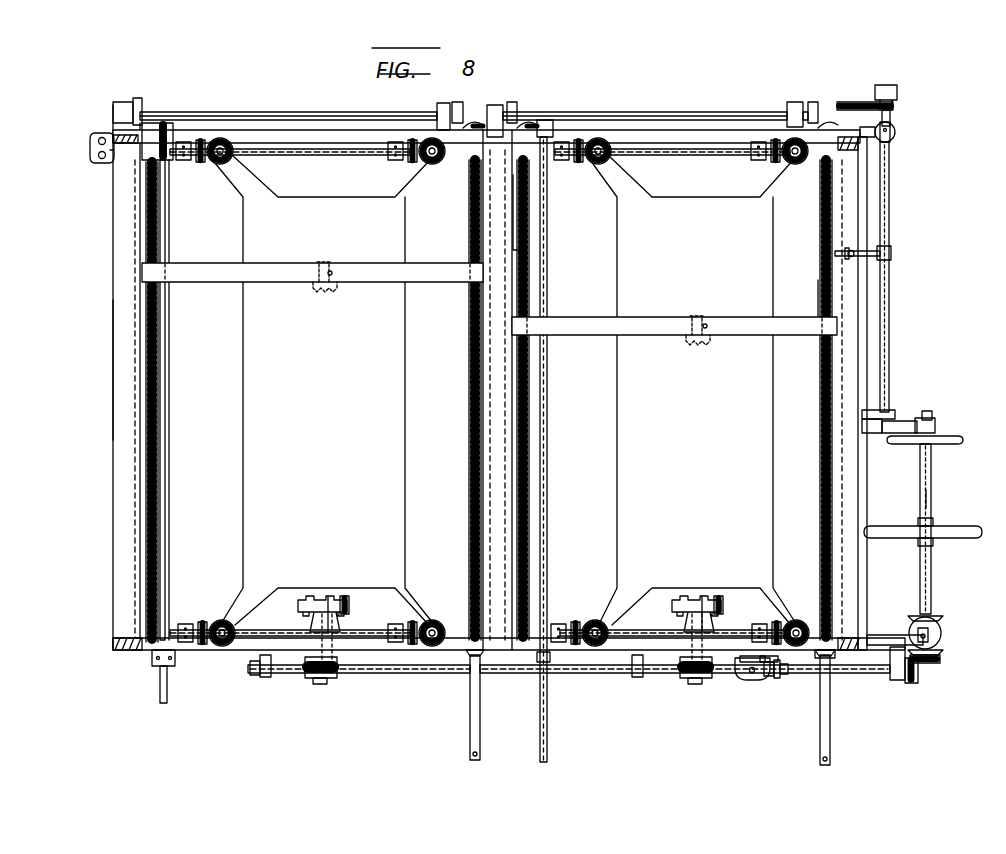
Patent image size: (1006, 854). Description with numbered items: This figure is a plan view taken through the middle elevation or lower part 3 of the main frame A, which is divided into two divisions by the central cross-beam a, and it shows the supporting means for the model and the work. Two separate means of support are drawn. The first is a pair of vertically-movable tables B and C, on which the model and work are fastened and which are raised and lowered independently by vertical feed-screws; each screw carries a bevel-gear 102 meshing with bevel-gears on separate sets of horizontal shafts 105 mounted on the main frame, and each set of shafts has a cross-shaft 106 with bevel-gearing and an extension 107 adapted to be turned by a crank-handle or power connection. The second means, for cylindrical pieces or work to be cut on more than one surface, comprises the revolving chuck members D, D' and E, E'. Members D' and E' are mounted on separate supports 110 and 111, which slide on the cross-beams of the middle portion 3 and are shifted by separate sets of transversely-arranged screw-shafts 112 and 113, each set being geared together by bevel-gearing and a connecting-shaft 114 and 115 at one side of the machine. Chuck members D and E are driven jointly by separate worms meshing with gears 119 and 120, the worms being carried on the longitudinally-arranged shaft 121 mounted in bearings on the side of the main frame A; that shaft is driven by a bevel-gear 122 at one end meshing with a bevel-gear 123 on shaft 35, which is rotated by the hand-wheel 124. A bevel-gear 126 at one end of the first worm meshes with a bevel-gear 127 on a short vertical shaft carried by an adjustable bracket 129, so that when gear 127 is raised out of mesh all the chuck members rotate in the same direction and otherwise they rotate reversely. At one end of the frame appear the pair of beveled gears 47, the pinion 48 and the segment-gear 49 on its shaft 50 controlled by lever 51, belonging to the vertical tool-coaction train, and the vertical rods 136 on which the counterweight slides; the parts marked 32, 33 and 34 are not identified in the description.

The lower part of main frame 3 is at (112, 369).
The main frame A is at (112, 247).
The vertically-movable table B is at (691, 390).
The vertically-movable table C is at (321, 390).
The revolving chuck member D is at (697, 613).
The revolving chuck member E is at (323, 613).
The revolving chuck member D' is at (700, 341).
The revolving chuck member E' is at (327, 293).
The central cross-beam a is at (495, 376).
The collar 32 is at (926, 634).
The hand wheel 33 is at (950, 526).
The shaft 34 is at (932, 484).
The shaft 35 is at (932, 503).
The beveled gears 47 is at (897, 130).
The pinion 48 is at (897, 112).
The segment-gear 49 is at (846, 97).
The shaft 50 is at (890, 312).
The lever 51 is at (886, 250).
The bevel-gear 102 is at (218, 162).
The horizontal shafts 105 is at (321, 160).
The cross-shaft 106 is at (170, 410).
The extension 107 is at (168, 694).
The support 110 is at (740, 310).
The support 111 is at (366, 261).
The transversely-arranged screw-shafts 112 is at (530, 378).
The transversely-arranged screw-shafts 113 is at (159, 368).
The connecting-shaft 114 is at (686, 108).
The connecting-shaft 115 is at (293, 108).
The gear 119 is at (678, 676).
The gear 120 is at (305, 678).
The longitudinally-arranged shaft 121 is at (408, 675).
The bevel-gear 122 is at (912, 684).
The bevel-gear 123 is at (932, 658).
The hand-wheel 124 is at (950, 430).
The bevel-gear 126 is at (742, 680).
The bevel-gear 127 is at (756, 682).
The adjustable bracket 129 is at (782, 672).
The vertical rods 136 is at (85, 165).